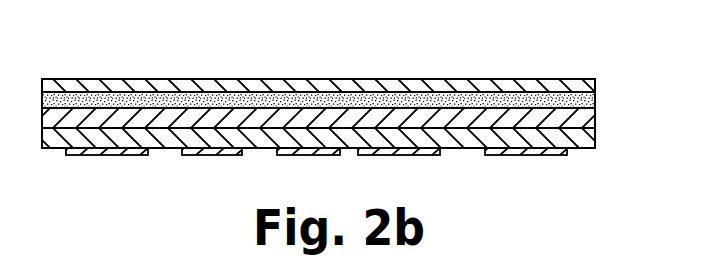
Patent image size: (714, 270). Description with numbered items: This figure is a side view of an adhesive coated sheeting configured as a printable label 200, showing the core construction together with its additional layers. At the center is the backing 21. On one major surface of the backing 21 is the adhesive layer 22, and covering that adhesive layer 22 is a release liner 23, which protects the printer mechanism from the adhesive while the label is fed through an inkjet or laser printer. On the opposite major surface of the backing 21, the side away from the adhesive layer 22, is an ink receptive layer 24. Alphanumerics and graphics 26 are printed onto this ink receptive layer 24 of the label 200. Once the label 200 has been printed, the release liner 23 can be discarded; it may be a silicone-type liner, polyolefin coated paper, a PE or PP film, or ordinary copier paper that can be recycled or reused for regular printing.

The label 200 is at (127, 69).
The release liner 23 is at (560, 78).
The adhesive layer 22 is at (587, 100).
The backing 21 is at (587, 115).
The ink receptive layer 24 is at (582, 132).
The alphanumerics and graphics 26 is at (443, 155).